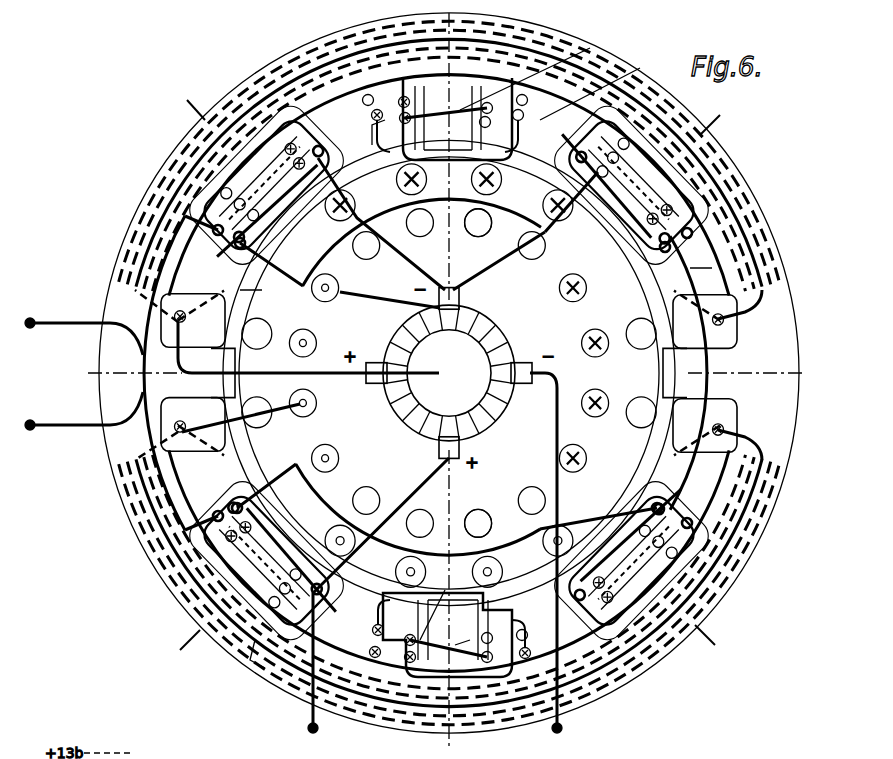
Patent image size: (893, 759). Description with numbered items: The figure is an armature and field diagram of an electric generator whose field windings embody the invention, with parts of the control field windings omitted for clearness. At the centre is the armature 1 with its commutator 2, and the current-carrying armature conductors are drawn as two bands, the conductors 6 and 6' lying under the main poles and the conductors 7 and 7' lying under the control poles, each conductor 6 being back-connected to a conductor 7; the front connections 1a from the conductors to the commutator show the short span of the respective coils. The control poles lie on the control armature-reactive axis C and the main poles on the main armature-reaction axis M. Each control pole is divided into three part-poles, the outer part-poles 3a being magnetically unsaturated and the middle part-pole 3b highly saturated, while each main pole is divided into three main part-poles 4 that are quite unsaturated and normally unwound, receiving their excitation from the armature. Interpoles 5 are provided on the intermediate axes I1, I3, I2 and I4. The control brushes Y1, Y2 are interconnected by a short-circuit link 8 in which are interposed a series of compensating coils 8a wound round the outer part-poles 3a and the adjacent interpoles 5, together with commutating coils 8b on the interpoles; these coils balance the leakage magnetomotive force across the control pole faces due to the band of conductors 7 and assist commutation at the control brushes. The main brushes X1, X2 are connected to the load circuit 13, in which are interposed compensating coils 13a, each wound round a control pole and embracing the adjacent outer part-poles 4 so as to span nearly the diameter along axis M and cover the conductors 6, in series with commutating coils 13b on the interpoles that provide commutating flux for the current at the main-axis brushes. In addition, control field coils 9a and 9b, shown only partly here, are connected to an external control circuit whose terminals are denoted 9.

The armature 1 is at (448, 373).
The front connections 1a is at (385, 298).
The commutator 2 is at (440, 378).
The outer part-poles 3a is at (446, 379).
The middle part-pole 3b is at (551, 348).
The main part-poles 4 is at (442, 370).
The interpoles 5 is at (280, 220).
The armature conductors 6 is at (454, 442).
The armature conductors 6' is at (470, 373).
The armature conductors 7 is at (449, 375).
The armature conductors 7' is at (259, 427).
The short-circuit link 8 is at (420, 263).
The compensating coils 8a is at (318, 150).
The commutating coils 8b is at (255, 140).
The terminals 9 is at (84, 368).
The control coils 9a is at (372, 150).
The control coils 9b is at (512, 337).
The load circuit 13 is at (628, 690).
The compensating coils 13a is at (215, 232).
The commutating coils 13b is at (268, 128).
The control armature-reactive axis C is at (447, 377).
The intermediate axis I1 is at (187, 115).
The intermediate axis I2 is at (707, 641).
The intermediate axis I3 is at (710, 125).
The intermediate axis I4 is at (191, 648).
The main armature-reaction axis M is at (447, 380).
The main brush X1 is at (308, 377).
The main brush X2 is at (536, 548).
The control brush Y1 is at (433, 452).
The control brush Y2 is at (460, 299).